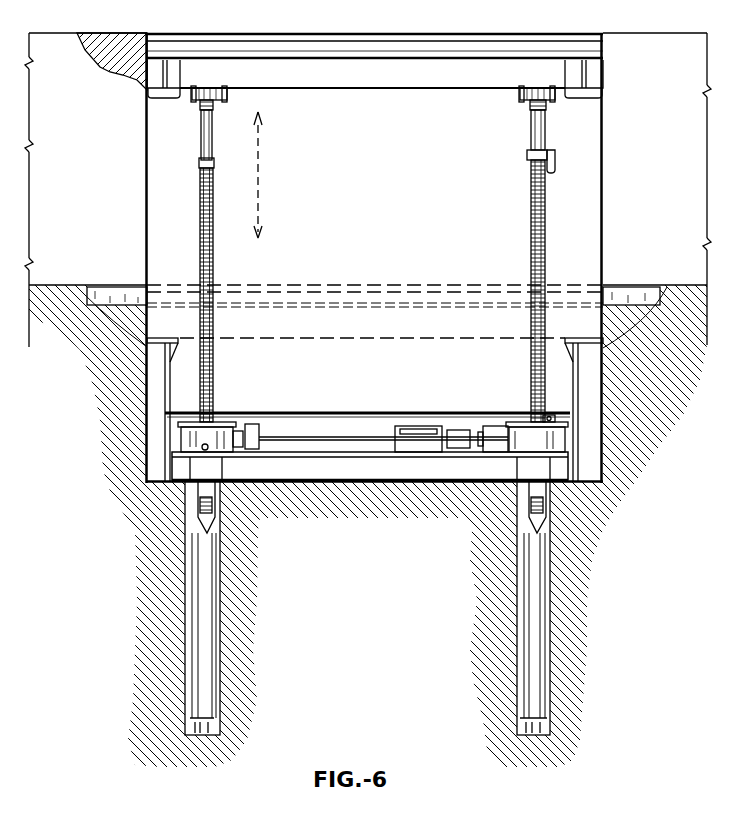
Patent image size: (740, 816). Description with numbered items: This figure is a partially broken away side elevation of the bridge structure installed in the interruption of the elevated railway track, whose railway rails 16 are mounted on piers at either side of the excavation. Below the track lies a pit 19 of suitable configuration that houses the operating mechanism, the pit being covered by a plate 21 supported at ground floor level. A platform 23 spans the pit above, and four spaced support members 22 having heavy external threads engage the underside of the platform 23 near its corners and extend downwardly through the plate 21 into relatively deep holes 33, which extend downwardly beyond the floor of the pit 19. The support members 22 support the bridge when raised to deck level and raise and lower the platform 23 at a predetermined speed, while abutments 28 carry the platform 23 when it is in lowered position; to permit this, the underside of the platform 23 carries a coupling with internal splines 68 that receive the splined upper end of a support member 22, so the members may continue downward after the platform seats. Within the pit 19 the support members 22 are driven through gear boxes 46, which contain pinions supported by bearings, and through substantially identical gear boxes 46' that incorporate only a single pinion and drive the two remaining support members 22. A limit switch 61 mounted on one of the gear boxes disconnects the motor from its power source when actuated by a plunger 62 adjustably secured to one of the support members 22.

The platform 23 is at (373, 50).
The internal splines 68 is at (213, 108).
The plunger 62 is at (548, 150).
The support member 22 is at (530, 224).
The railway rails 16 is at (107, 295).
The abutments 28 is at (166, 399).
The gear box 46' is at (216, 417).
The pit 19 is at (278, 420).
The plate 21 is at (358, 412).
The limit switch 61 is at (549, 416).
The gear box 46 is at (527, 450).
The holes 33 is at (215, 730).